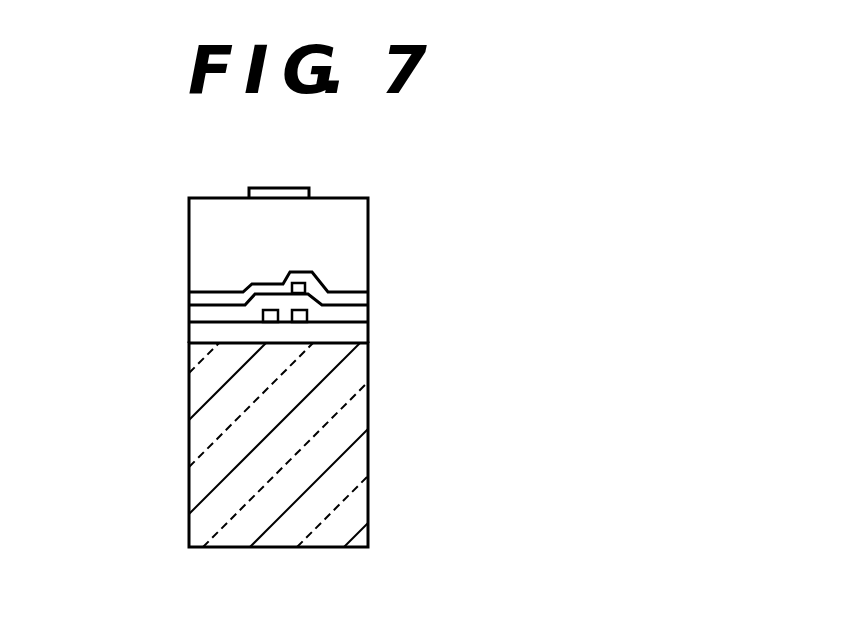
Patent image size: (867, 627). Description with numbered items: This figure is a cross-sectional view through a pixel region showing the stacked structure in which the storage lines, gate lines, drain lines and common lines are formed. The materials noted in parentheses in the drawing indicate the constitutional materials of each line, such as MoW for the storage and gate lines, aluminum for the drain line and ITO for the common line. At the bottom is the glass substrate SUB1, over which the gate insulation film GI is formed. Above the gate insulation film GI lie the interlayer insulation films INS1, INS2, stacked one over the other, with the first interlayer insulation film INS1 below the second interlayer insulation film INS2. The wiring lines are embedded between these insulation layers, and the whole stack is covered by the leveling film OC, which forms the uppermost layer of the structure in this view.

The leveling film OC is at (197, 248).
The interlayer insulation film INS2 is at (366, 301).
The interlayer insulation film INS1 is at (360, 313).
The gate insulation film GI is at (360, 337).
The glass substrate SUB1 is at (363, 498).